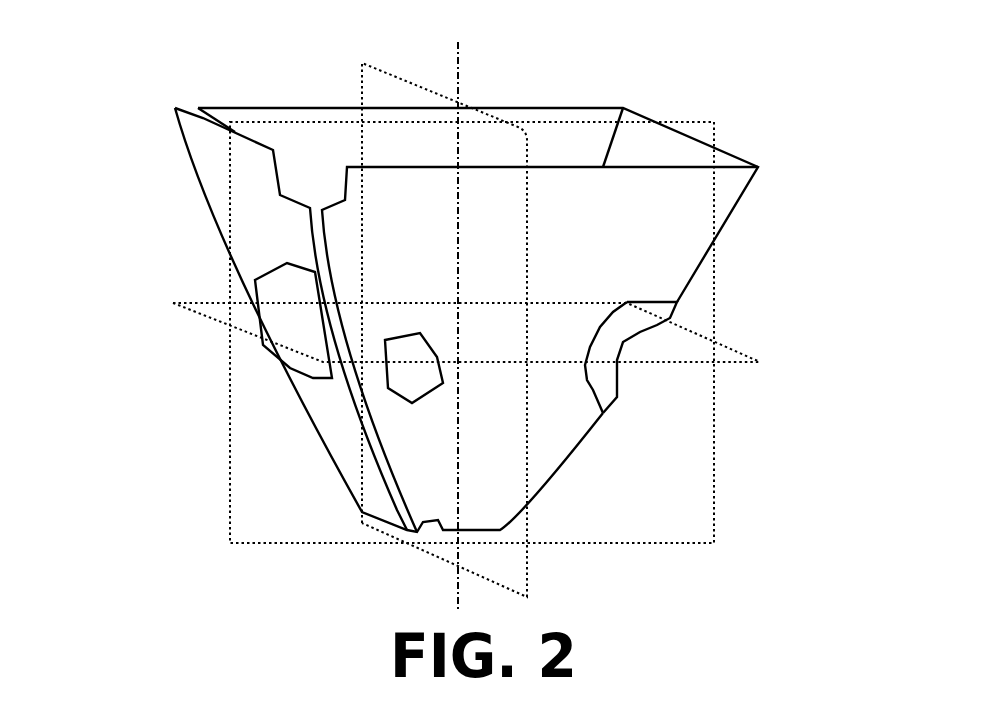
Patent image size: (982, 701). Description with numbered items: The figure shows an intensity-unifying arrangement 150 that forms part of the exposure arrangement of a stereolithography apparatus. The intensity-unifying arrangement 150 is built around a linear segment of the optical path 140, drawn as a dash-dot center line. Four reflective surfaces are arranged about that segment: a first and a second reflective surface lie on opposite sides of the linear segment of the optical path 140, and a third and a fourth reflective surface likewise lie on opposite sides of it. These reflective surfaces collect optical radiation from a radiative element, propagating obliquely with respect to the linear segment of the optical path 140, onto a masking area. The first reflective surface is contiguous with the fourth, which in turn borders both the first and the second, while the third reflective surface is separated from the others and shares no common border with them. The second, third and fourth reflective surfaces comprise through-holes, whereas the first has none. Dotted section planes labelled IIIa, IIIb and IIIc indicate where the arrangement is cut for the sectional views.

The optical path 140 is at (458, 72).
The intensity-unifying arrangement 150 is at (463, 328).
The section plane IIIa is at (528, 573).
The section plane IIIb is at (715, 432).
The section plane IIIc is at (208, 318).